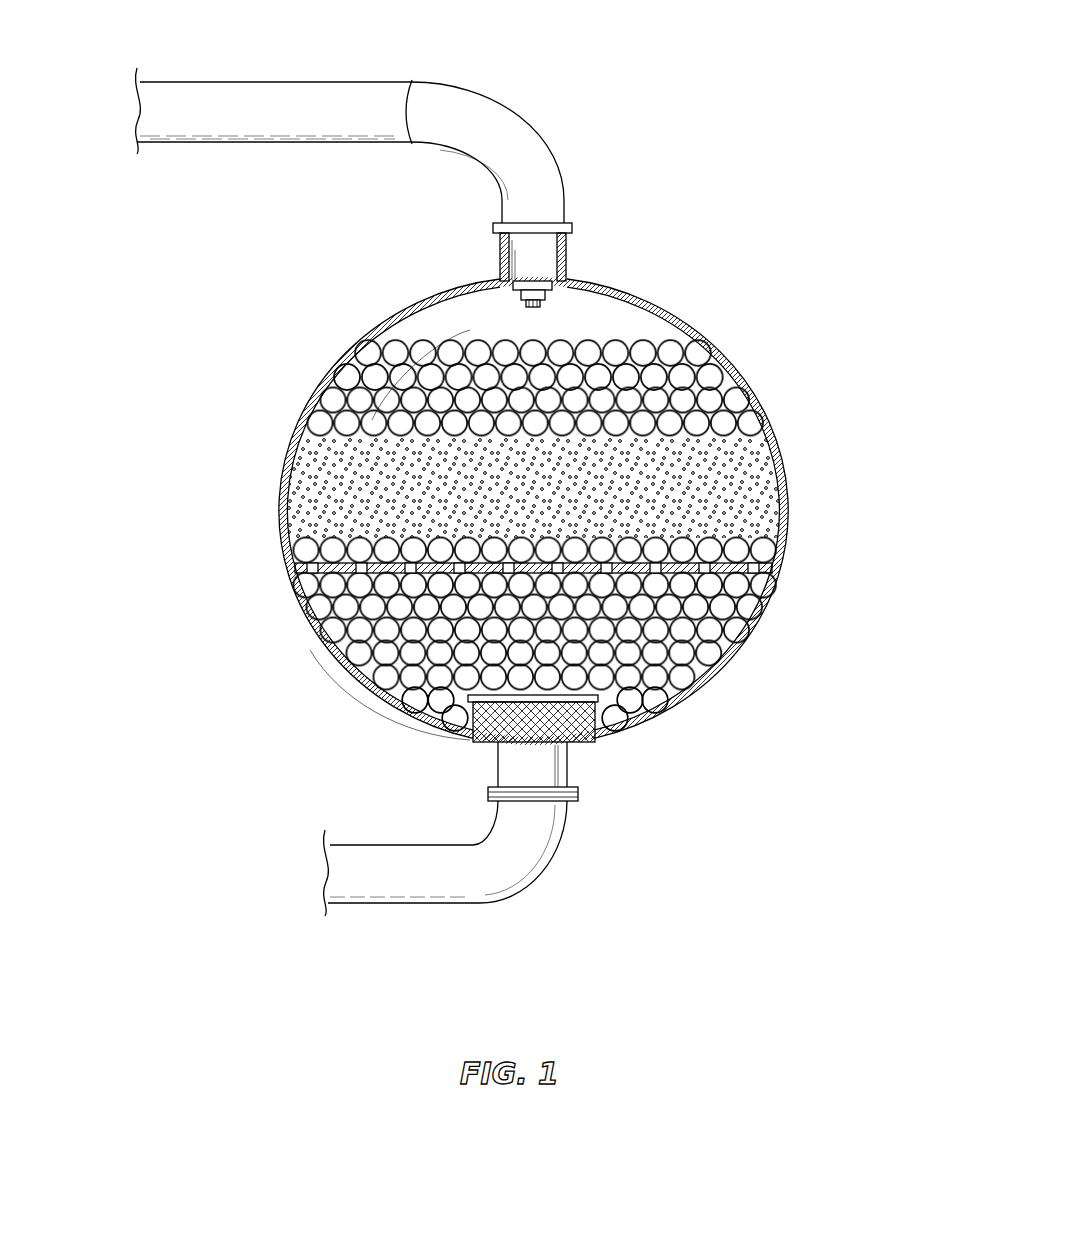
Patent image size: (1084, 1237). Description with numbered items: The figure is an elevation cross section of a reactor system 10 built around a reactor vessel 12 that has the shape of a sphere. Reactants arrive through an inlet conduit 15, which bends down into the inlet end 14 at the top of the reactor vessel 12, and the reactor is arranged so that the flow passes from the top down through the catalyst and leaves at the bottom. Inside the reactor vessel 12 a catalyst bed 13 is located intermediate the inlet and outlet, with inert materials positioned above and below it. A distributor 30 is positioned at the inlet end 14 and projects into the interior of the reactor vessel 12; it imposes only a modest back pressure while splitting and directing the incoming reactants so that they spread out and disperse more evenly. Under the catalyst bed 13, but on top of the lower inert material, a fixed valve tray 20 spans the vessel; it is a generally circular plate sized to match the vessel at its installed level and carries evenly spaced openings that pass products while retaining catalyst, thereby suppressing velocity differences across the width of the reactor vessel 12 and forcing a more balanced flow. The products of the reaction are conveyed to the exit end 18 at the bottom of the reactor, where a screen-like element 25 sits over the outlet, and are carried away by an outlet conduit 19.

The reactor system 10 is at (742, 99).
The reactor vessel 12 is at (748, 380).
The catalyst bed 13 is at (767, 488).
The inlet end 14 is at (566, 263).
The inlet conduit 15 is at (312, 82).
The exit end 18 is at (577, 745).
The outlet conduit 19 is at (445, 903).
The fixed valve tray 20 is at (772, 576).
The outlet screen 25 is at (488, 735).
The distributor 30 is at (498, 282).